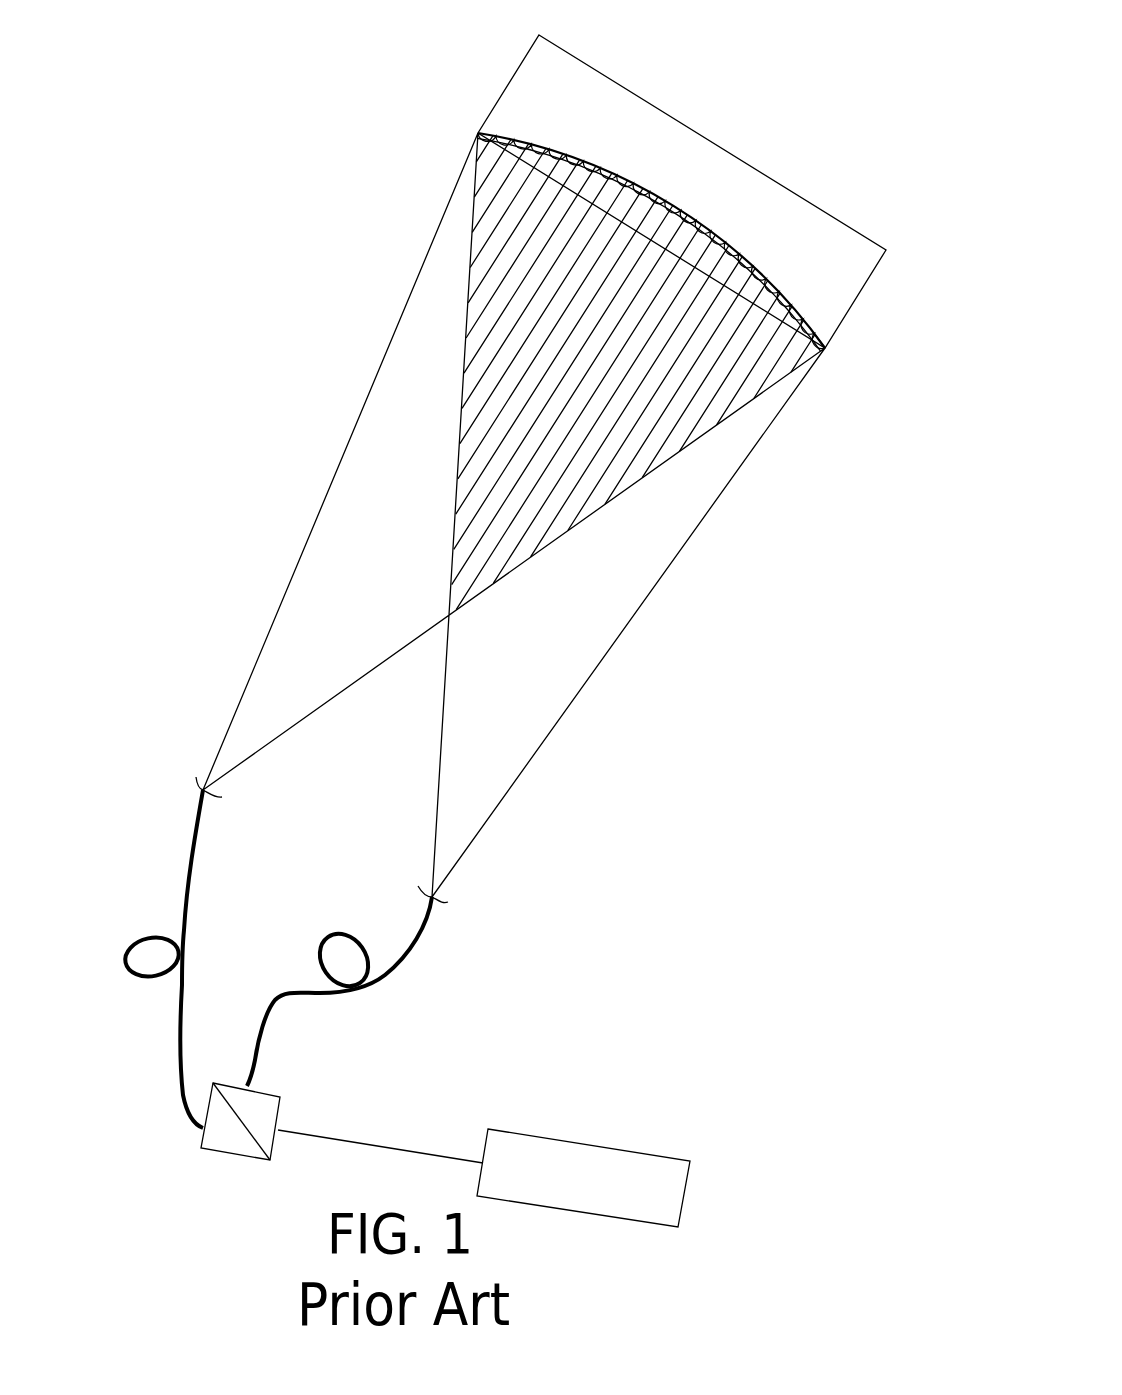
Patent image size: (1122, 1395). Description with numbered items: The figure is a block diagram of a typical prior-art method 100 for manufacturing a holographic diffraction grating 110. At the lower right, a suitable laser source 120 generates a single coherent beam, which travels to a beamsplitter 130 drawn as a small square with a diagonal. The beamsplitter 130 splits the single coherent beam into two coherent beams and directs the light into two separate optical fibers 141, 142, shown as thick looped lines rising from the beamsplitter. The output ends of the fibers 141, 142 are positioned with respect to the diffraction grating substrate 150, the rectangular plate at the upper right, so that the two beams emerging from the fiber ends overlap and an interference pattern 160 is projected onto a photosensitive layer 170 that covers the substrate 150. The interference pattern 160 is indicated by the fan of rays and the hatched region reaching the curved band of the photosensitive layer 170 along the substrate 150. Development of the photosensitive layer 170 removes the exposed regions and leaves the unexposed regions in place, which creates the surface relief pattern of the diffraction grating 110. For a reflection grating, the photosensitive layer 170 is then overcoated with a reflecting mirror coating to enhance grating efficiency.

The method for manufacturing a holographic diffraction grating 100 is at (222, 53).
The holographic diffraction grating 110 is at (454, 115).
The laser source 120 is at (533, 1133).
The beamsplitter 130 is at (220, 1155).
The optical fiber 141 is at (262, 1035).
The optical fiber 142 is at (175, 1025).
The diffraction grating substrate 150 is at (670, 133).
The interference pattern 160 is at (773, 397).
The photosensitive layer 170 is at (823, 349).